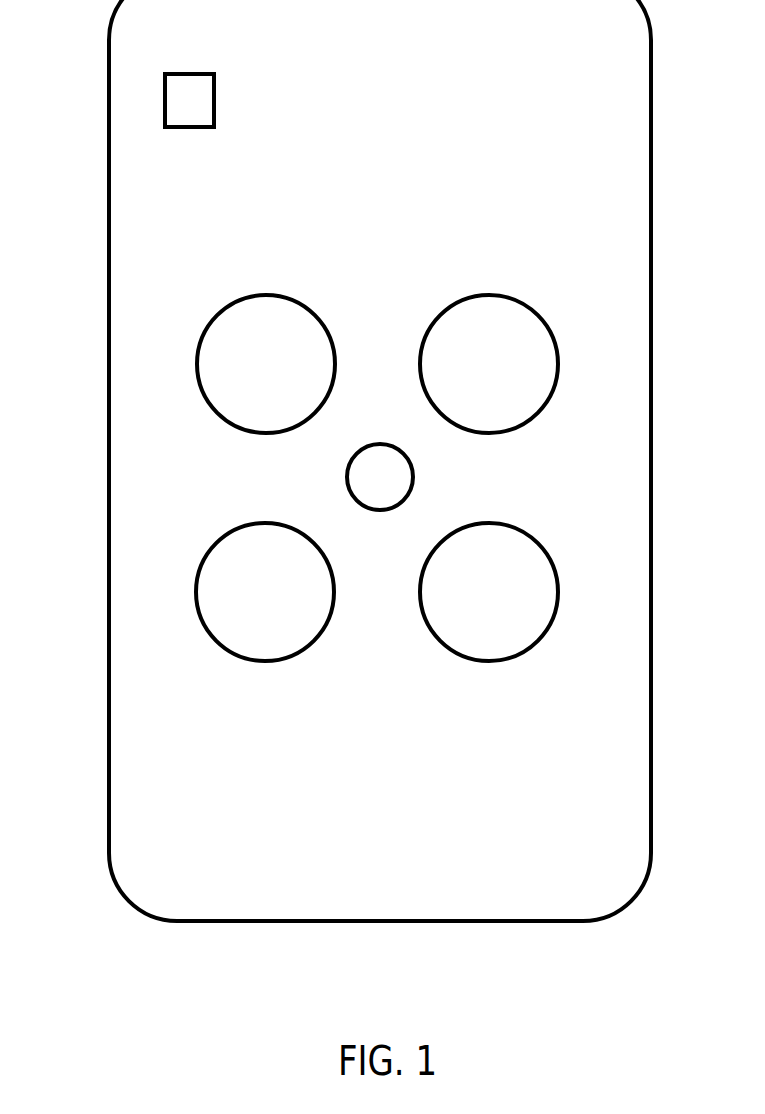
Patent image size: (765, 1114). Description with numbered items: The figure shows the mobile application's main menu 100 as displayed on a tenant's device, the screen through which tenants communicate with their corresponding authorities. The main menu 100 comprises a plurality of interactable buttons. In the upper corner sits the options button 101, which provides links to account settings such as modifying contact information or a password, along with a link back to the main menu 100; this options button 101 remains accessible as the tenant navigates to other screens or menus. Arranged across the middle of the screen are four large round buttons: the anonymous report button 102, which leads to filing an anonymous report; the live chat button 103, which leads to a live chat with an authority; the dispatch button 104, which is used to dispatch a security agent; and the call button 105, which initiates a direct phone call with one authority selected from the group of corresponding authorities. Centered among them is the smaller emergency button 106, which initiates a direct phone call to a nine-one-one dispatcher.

The main menu 100 is at (392, 104).
The options button 101 is at (179, 105).
The anonymous report button 102 is at (285, 360).
The live chat button 103 is at (509, 359).
The dispatch button 104 is at (285, 594).
The call button 105 is at (509, 594).
The emergency button 106 is at (366, 490).